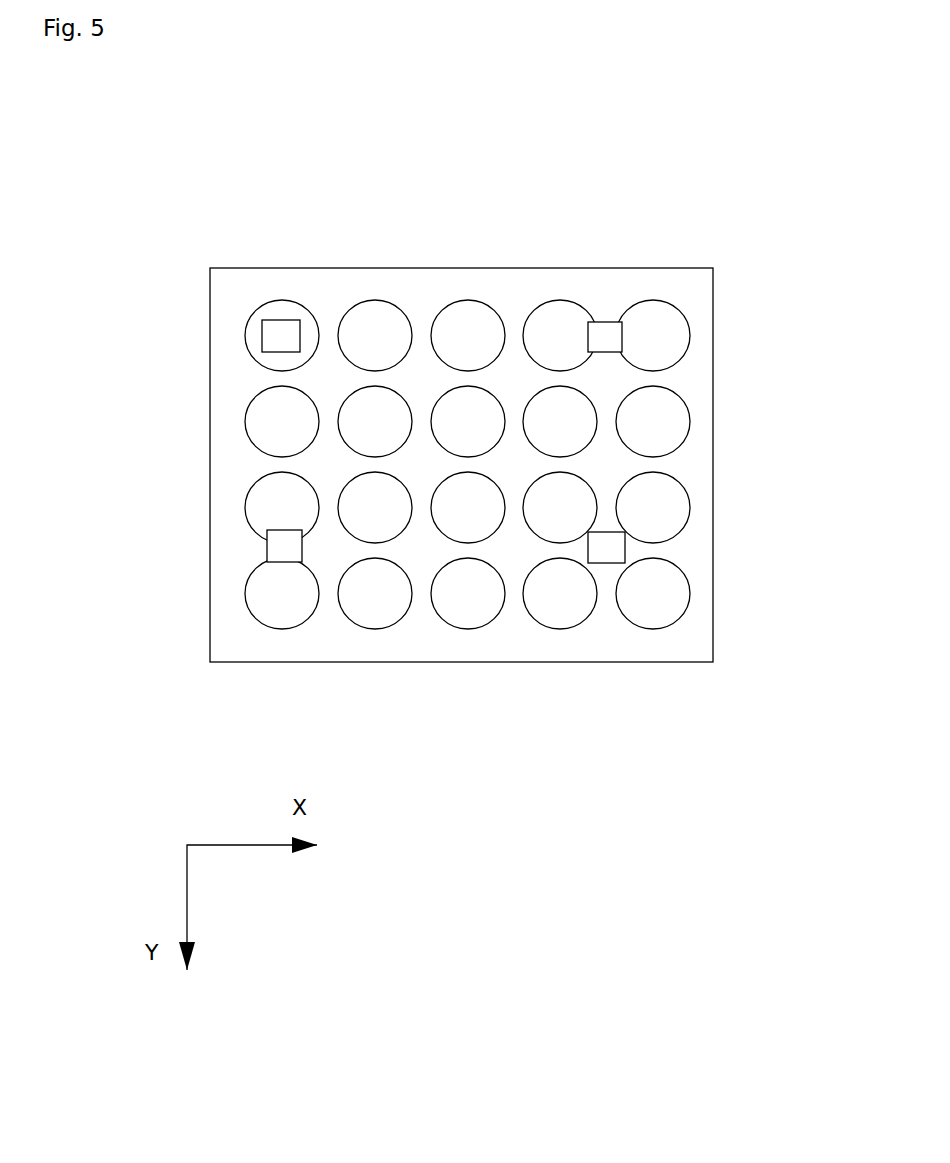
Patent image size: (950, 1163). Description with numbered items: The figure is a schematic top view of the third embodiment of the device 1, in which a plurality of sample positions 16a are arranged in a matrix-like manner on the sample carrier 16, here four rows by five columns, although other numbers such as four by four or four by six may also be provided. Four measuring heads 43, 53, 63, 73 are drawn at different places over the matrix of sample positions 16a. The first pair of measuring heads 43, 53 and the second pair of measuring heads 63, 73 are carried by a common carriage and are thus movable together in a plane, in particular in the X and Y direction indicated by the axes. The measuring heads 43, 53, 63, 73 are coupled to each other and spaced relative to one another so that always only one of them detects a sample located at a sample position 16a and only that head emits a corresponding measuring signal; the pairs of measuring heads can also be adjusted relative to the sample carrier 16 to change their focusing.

The device 1 is at (712, 158).
The plate 16 is at (702, 378).
The sample positions 16a is at (475, 595).
The measuring head 63 is at (285, 330).
The measuring head 73 is at (602, 325).
The measuring head 43 is at (267, 548).
The measuring head 53 is at (615, 545).